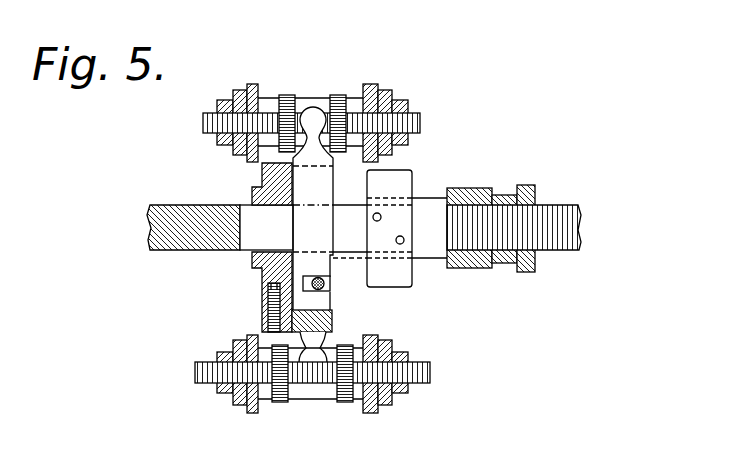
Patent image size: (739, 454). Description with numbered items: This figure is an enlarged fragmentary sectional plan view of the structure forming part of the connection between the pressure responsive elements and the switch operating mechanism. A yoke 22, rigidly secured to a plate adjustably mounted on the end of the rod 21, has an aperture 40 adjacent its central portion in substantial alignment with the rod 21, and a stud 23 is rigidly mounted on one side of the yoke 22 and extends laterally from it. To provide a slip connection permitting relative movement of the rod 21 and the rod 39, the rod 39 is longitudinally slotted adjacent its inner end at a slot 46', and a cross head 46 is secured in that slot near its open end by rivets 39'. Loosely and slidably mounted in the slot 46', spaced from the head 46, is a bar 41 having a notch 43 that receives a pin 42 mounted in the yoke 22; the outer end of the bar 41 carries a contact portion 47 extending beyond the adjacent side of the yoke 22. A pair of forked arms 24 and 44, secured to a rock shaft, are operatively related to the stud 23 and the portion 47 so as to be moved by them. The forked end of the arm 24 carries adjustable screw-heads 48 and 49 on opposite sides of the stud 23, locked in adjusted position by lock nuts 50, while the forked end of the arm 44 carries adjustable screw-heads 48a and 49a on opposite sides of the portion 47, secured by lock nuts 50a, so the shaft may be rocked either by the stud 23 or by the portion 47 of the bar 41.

The rod 21 is at (559, 212).
The yoke 22 is at (268, 183).
The stud 23 is at (325, 346).
The forked arm 24 is at (316, 388).
The rod 39 is at (193, 215).
The rivets 39' is at (408, 228).
The aperture 40 is at (255, 262).
The bar 41 is at (314, 196).
The pin 42 is at (332, 285).
The notch 43 is at (268, 290).
The forked arm 44 is at (318, 101).
The cross head 46 is at (400, 218).
The slot 46' is at (248, 216).
The contact portion 47 is at (306, 112).
The adjustable screw-head 48 is at (286, 392).
The adjustable screw-head 48a is at (283, 97).
The adjustable screw-head 49 is at (345, 398).
The adjustable screw-head 49a is at (339, 96).
The lock nuts 50 is at (400, 101).
The lock nuts 50a is at (217, 107).